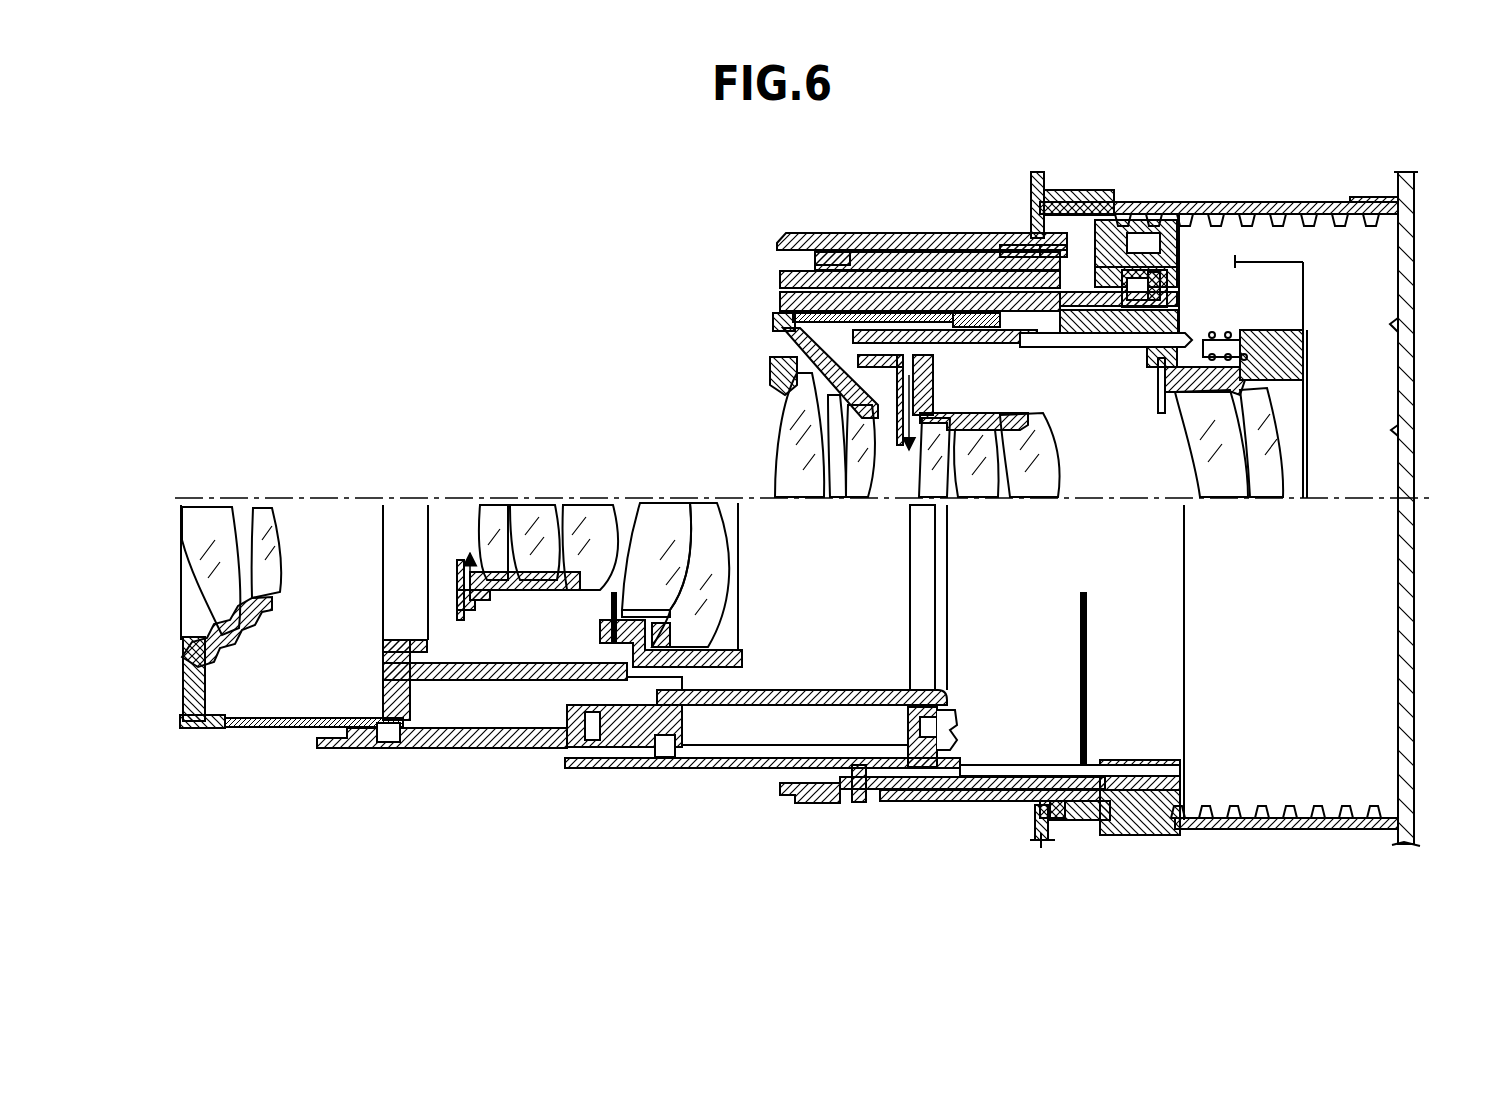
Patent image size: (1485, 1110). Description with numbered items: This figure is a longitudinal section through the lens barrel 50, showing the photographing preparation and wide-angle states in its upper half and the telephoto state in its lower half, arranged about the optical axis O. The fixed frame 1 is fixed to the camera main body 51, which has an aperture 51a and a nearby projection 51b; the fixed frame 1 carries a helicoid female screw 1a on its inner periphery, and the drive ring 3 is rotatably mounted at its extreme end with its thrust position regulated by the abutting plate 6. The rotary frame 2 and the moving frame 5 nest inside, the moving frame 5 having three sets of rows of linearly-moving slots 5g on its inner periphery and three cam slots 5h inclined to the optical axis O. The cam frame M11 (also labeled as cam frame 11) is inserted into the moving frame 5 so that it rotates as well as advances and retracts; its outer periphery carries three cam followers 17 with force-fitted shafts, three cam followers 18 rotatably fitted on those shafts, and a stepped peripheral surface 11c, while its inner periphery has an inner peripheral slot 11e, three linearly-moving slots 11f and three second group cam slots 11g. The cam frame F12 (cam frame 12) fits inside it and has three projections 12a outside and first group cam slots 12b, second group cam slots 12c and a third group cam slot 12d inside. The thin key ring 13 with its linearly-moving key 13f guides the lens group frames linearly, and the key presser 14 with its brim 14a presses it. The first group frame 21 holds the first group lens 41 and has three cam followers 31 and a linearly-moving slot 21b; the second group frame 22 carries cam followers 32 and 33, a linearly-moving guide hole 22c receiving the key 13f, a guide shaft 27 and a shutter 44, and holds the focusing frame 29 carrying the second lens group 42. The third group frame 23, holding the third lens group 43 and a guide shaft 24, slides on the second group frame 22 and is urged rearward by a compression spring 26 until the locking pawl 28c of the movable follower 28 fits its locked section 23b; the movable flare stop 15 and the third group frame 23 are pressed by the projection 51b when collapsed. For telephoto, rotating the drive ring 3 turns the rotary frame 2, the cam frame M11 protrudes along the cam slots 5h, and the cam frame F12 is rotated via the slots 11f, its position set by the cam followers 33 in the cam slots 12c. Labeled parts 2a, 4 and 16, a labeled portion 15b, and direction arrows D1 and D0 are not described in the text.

The fixed frame 1 is at (1362, 203).
The helicoid female screw 1a is at (1272, 215).
The rotary frame 2 is at (895, 255).
The cam ring flange 2a is at (840, 255).
The drive ring 3 is at (1084, 200).
The ring 4 is at (1147, 240).
The moving frame 5 is at (806, 240).
The linearly-moving slots 5g is at (1152, 772).
The cam slots 5h is at (1012, 248).
The abutting plate 6 is at (1040, 200).
The cam frame 11 is at (782, 280).
The cam frame M11 is at (812, 522).
The stepped peripheral surface 11c is at (1052, 766).
The inner peripheral slot 11e is at (905, 792).
The linearly-moving slots 11f is at (636, 750).
The second group cam slots 11g is at (1140, 230).
The cam frame 12 is at (792, 300).
The cam frame F12 is at (747, 536).
The projections 12a is at (641, 822).
The first group cam slots 12b is at (721, 587).
The second group cam slots 12c is at (813, 587).
The third group cam slot 12d is at (925, 262).
The key ring 13 is at (1182, 260).
The linearly-moving key 13f is at (846, 690).
The key presser 14 is at (905, 716).
The brim 14a is at (923, 848).
The movable flare stop 15 is at (1306, 302).
The plate portion 15b is at (1265, 262).
The clip 16 is at (955, 722).
The cam followers 17 is at (1060, 248).
The cam followers 18 is at (812, 806).
The first group frame 21 is at (785, 333).
The linearly-moving slot 21b is at (285, 728).
The second group frame 22 is at (775, 382).
The linearly-moving guide hole 22c is at (700, 682).
The third group frame 23 is at (1300, 386).
The locked section 23b is at (1160, 392).
The guide shaft 24 is at (1258, 345).
The compression spring 26 is at (1215, 338).
The guide shaft 27 is at (1110, 347).
The movable follower 28 is at (1160, 340).
The locking pawl 28c is at (1235, 420).
The focusing frame 29 is at (990, 414).
The cam followers 31 is at (1050, 333).
The cam followers 32 is at (932, 478).
The cam followers 33 is at (1090, 333).
The first group lens 41 is at (805, 505).
The second lens group 42 is at (1025, 505).
The third lens group 43 is at (1240, 470).
The shutter 44 is at (915, 402).
The lens barrel 50 is at (1318, 128).
The camera main body 51 is at (1415, 205).
The aperture 51a is at (1402, 452).
The projection 51b is at (1398, 325).
The optical axis O is at (185, 500).
The direction D1 is at (568, 233).
The direction D0 is at (568, 233).